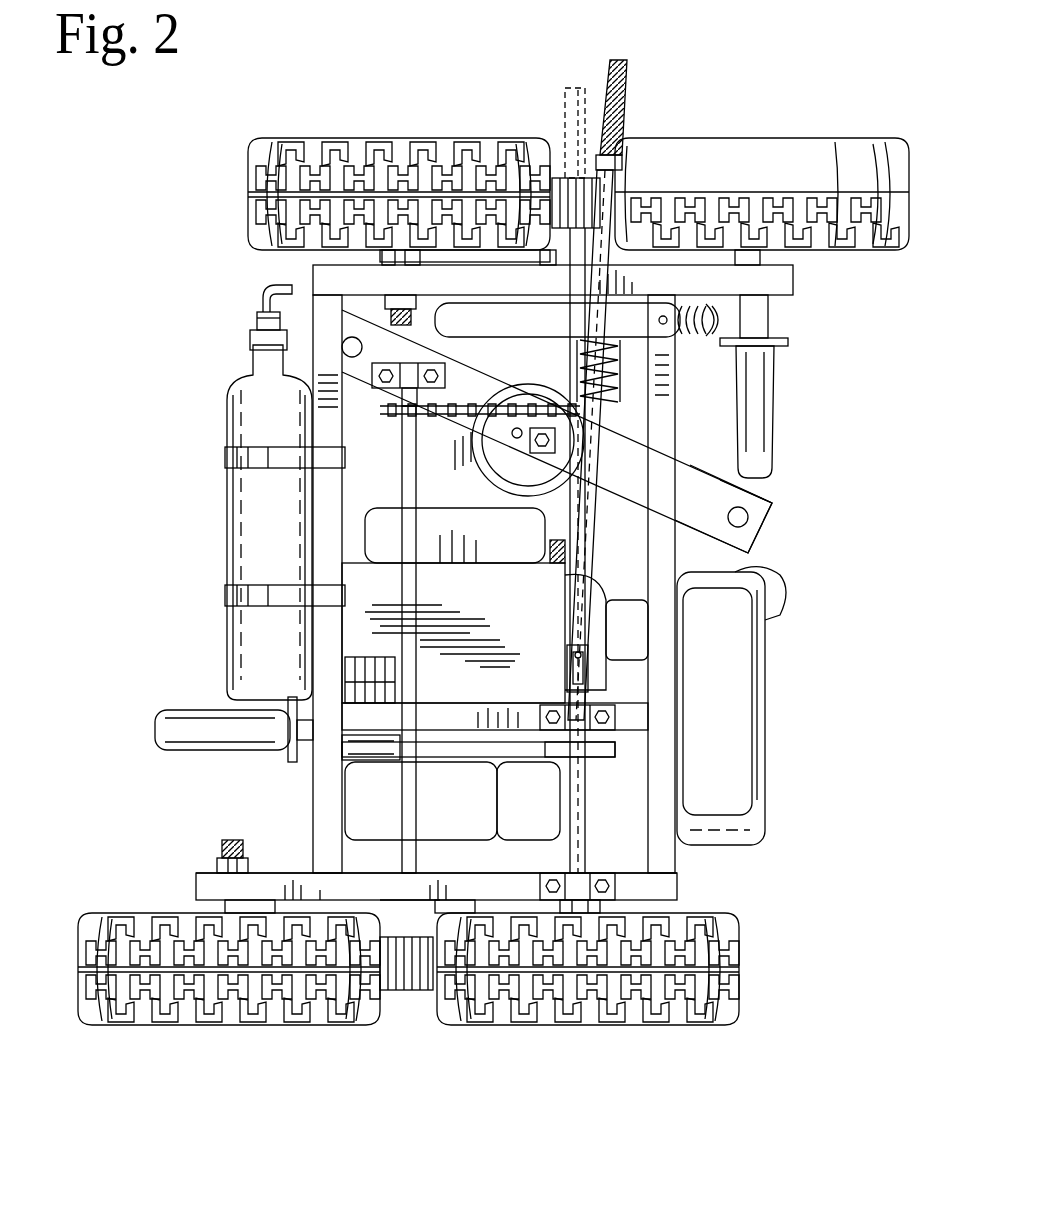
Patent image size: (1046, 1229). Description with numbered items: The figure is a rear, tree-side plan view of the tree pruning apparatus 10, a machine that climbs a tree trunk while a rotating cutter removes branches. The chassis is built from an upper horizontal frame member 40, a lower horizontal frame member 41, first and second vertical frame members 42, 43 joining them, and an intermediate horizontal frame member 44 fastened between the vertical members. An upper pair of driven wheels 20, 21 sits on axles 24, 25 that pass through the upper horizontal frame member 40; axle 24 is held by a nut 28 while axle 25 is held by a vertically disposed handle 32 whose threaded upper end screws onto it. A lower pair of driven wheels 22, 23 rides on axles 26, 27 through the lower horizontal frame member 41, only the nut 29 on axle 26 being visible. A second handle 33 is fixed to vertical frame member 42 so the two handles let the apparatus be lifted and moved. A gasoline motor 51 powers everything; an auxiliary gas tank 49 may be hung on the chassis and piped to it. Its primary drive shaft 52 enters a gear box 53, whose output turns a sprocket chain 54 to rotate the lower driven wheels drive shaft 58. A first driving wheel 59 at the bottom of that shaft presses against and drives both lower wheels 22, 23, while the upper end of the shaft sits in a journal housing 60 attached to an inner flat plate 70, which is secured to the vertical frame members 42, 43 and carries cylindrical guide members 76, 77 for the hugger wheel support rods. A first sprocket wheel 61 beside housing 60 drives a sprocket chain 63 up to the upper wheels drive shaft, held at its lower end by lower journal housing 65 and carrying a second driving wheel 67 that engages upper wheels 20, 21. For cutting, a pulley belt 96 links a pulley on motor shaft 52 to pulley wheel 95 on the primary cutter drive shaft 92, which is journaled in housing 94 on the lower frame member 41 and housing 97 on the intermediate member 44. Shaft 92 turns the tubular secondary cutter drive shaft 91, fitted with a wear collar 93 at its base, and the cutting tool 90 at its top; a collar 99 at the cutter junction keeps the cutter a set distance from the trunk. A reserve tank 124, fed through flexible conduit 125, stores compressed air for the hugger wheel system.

The tree pruning apparatus 10 is at (112, 330).
The upper driven wheel 20 is at (248, 178).
The upper driven wheel 21 is at (905, 242).
The lower driven wheel 22 is at (90, 1008).
The lower driven wheel 23 is at (732, 1008).
The axle 24 is at (362, 252).
The axle 25 is at (790, 262).
The axle 26 is at (200, 888).
The axle 27 is at (690, 910).
The nut 28 is at (412, 302).
The nut 29 is at (222, 865).
The handle 32 is at (772, 418).
The handle 33 is at (163, 722).
The upper horizontal frame member 40 is at (780, 300).
The lower horizontal frame member 41 is at (196, 885).
The first vertical frame member 42 is at (290, 432).
The second vertical frame member 43 is at (675, 420).
The intermediate horizontal frame member 44 is at (460, 712).
The auxiliary gas tank 49 is at (765, 735).
The motor 51 is at (494, 607).
The primary drive shaft 52 is at (362, 682).
The gear box 53 is at (362, 817).
The sprocket chain 54 is at (352, 745).
The lower driven wheels drive shaft 58 is at (400, 565).
The first driving wheel 59 is at (408, 990).
The journal housing 60 is at (415, 345).
The first sprocket wheel 61 is at (398, 415).
The sprocket chain 63 is at (470, 416).
The lower journal housing 65 is at (520, 478).
The second driving wheel 67 is at (560, 180).
The inner flat plate 70 is at (770, 520).
The cylindrical guide member 76 is at (748, 515).
The cylindrical guide member 77 is at (347, 318).
The cutting tool 90 is at (565, 96).
The secondary cutter drive shaft 91 is at (598, 500).
The primary cutter drive shaft 92 is at (575, 812).
The collar 93 is at (568, 672).
The journal housing 94 is at (590, 865).
The pulley wheel 95 is at (600, 758).
The pulley belt 96 is at (510, 745).
The journal housing 97 is at (625, 710).
The collar 99 is at (588, 135).
The reserve tank 124 is at (228, 508).
The flexible conduit 125 is at (268, 298).